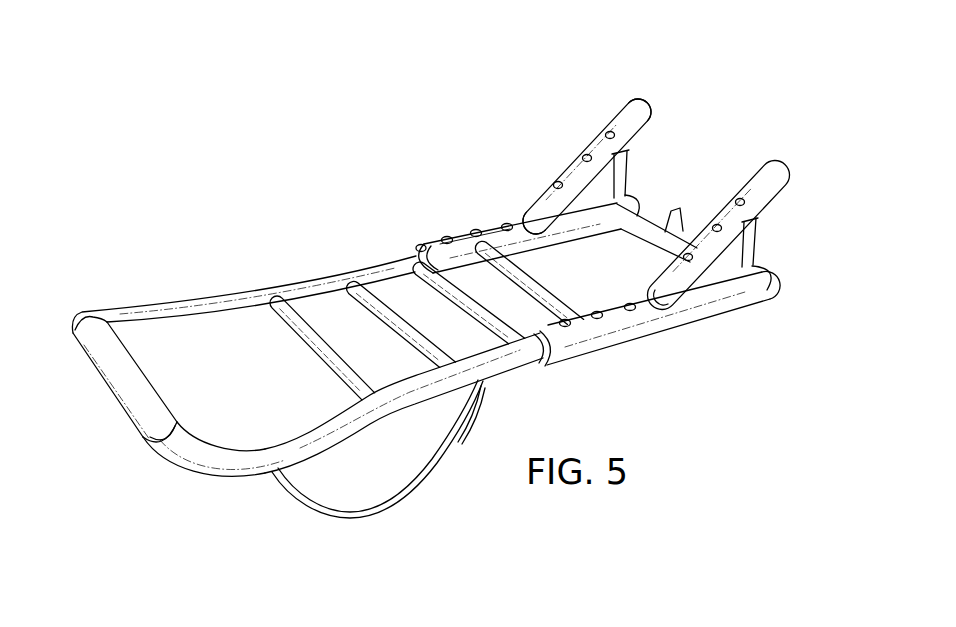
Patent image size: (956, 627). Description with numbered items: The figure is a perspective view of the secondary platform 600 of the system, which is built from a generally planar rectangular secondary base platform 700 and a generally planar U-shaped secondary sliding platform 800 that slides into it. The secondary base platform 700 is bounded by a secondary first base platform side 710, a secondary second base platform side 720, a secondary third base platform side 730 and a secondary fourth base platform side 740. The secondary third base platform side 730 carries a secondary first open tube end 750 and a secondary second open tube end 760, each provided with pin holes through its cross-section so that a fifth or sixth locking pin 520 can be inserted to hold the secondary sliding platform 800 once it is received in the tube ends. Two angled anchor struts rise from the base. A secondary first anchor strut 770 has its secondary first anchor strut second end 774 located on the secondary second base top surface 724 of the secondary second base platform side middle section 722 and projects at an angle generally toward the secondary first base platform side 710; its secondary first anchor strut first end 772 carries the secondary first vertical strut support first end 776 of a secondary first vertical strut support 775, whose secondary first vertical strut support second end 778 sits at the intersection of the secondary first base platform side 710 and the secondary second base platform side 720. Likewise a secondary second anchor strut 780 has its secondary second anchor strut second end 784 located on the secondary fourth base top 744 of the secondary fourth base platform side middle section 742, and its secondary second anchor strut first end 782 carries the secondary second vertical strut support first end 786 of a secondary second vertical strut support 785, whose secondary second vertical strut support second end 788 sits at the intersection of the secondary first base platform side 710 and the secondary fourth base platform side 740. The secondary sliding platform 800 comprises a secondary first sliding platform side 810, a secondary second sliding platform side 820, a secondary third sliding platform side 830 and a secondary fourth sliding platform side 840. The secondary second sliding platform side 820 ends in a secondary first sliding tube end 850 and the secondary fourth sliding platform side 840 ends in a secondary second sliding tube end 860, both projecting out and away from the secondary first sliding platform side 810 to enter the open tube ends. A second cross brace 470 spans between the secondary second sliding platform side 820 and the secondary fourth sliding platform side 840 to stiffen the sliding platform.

The secondary platform 600 is at (168, 88).
The second cross brace 470 is at (317, 343).
The locking pin 520 is at (559, 183).
The secondary base platform 700 is at (703, 313).
The secondary first base platform side 710 is at (755, 227).
The secondary second base platform side 720 is at (687, 314).
The secondary second base platform side middle section 722 is at (640, 310).
The secondary second base top surface 724 is at (580, 328).
The secondary third base platform side 730 is at (449, 238).
The secondary fourth base platform side 740 is at (488, 230).
The secondary fourth base platform side middle section 742 is at (510, 228).
The secondary fourth base top 744 is at (421, 243).
The secondary first open tube end 750 is at (542, 368).
The secondary second open tube end 760 is at (417, 258).
The secondary first anchor strut 770 is at (770, 290).
The secondary first anchor strut first end 772 is at (775, 180).
The secondary first anchor strut second end 774 is at (660, 298).
The secondary first vertical strut support 775 is at (758, 237).
The secondary first vertical strut support first end 776 is at (758, 220).
The secondary first vertical strut support second end 778 is at (760, 264).
The secondary second anchor strut 780 is at (600, 148).
The secondary second anchor strut first end 782 is at (637, 102).
The secondary second anchor strut second end 784 is at (532, 213).
The secondary second vertical strut support 785 is at (627, 168).
The secondary second vertical strut support first end 786 is at (624, 156).
The secondary second vertical strut support second end 788 is at (630, 189).
The secondary sliding platform 800 is at (203, 473).
The secondary first sliding platform side 810 is at (463, 302).
The secondary second sliding platform side 820 is at (368, 430).
The secondary third sliding platform side 830 is at (103, 392).
The secondary fourth sliding platform side 840 is at (232, 292).
The secondary first sliding tube end 850 is at (513, 393).
The secondary second sliding tube end 860 is at (418, 249).